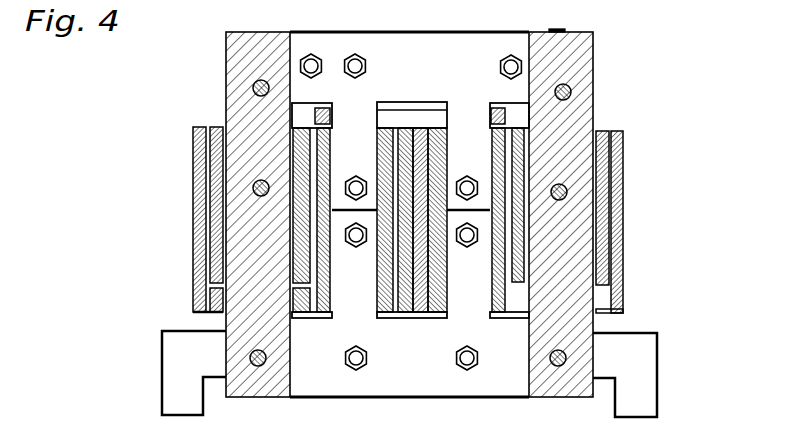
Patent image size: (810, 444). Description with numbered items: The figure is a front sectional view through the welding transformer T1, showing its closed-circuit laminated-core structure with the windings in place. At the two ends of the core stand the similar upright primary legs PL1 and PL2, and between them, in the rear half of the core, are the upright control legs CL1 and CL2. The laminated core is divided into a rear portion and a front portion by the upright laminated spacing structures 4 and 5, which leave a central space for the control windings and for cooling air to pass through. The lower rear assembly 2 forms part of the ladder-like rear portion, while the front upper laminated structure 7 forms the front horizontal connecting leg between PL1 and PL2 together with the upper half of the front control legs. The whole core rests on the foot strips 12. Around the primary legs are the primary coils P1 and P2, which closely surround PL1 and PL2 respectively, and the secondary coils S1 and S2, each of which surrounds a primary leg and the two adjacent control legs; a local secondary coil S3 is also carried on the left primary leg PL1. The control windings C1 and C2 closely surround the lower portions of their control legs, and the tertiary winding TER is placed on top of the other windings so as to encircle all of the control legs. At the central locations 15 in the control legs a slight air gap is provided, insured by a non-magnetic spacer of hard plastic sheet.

The rear portion laminated assembly 2 is at (504, 388).
The upright laminated spacing structure 4 is at (237, 50).
The upright laminated spacing structure 5 is at (589, 52).
The front upper laminated structure 7 is at (518, 33).
The foot strip 12 is at (162, 358).
The air gap location 15 is at (343, 212).
The transformer T1 is at (557, 22).
The tertiary winding TER is at (340, 98).
The primary leg PL1 is at (236, 106).
The primary leg PL2 is at (578, 112).
The primary coil P1 is at (216, 127).
The primary coil P2 is at (603, 130).
The secondary coil S1 is at (202, 193).
The secondary coil S2 is at (624, 206).
The local secondary coil S3 is at (220, 312).
The control leg CL1 is at (366, 158).
The control leg CL2 is at (487, 158).
The control winding C1 is at (377, 292).
The control winding C2 is at (496, 290).